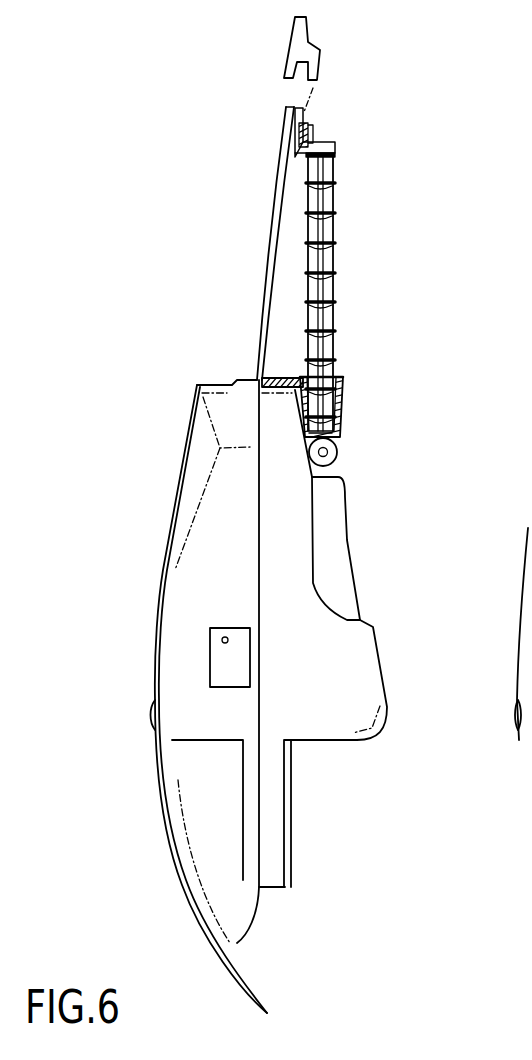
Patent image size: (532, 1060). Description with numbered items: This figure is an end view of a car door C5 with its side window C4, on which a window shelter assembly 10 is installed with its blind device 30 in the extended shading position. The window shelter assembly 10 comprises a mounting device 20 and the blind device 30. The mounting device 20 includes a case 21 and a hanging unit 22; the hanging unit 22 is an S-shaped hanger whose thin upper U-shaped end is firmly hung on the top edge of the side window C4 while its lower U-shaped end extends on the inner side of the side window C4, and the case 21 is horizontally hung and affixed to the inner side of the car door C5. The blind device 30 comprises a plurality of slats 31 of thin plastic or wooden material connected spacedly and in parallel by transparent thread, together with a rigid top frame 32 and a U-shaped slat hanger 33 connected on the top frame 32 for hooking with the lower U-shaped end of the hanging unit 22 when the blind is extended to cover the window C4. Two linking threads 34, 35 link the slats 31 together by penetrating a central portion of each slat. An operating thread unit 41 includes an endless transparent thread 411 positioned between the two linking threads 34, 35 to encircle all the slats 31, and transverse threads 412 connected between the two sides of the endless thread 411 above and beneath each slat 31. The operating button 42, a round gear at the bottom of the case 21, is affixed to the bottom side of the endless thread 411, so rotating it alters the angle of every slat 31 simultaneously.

The window shelter assembly 10 is at (371, 180).
The mounting device 20 is at (442, 410).
The case 21 is at (432, 375).
The hanging unit 22 is at (283, 127).
The blind device 30 is at (441, 300).
The slats 31 is at (337, 267).
The top frame 32 is at (433, 113).
The slat hanger 33 is at (313, 124).
The linking thread 34 is at (337, 322).
The linking thread 35 is at (499, 335).
The operating thread unit 41 is at (412, 207).
The endless transparent thread 411 is at (434, 165).
The transverse threads 412 is at (335, 210).
The operating button 42 is at (338, 455).
The side window C4 is at (260, 298).
The car door C5 is at (282, 637).